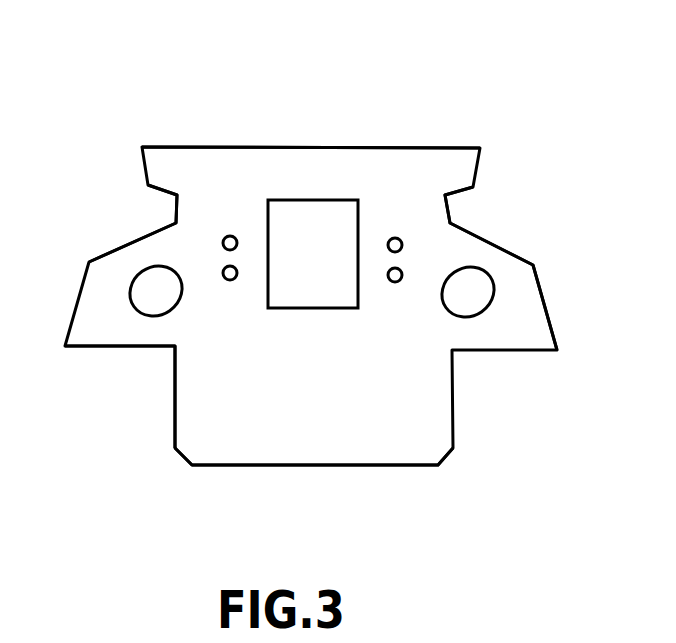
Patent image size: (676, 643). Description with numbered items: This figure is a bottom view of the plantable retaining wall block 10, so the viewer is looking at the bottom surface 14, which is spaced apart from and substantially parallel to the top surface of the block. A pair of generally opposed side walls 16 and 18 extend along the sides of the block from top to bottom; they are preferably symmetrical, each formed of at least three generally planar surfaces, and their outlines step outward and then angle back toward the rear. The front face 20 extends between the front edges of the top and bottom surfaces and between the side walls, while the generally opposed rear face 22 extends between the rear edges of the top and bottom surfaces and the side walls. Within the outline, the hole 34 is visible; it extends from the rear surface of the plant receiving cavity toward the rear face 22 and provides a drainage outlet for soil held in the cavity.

The wall block 10 is at (388, 72).
The rear face 22 is at (360, 148).
The hole 34 is at (337, 248).
The side wall 16 is at (142, 240).
The side wall 18 is at (540, 277).
The bottom surface 14 is at (112, 327).
The front face 20 is at (333, 467).